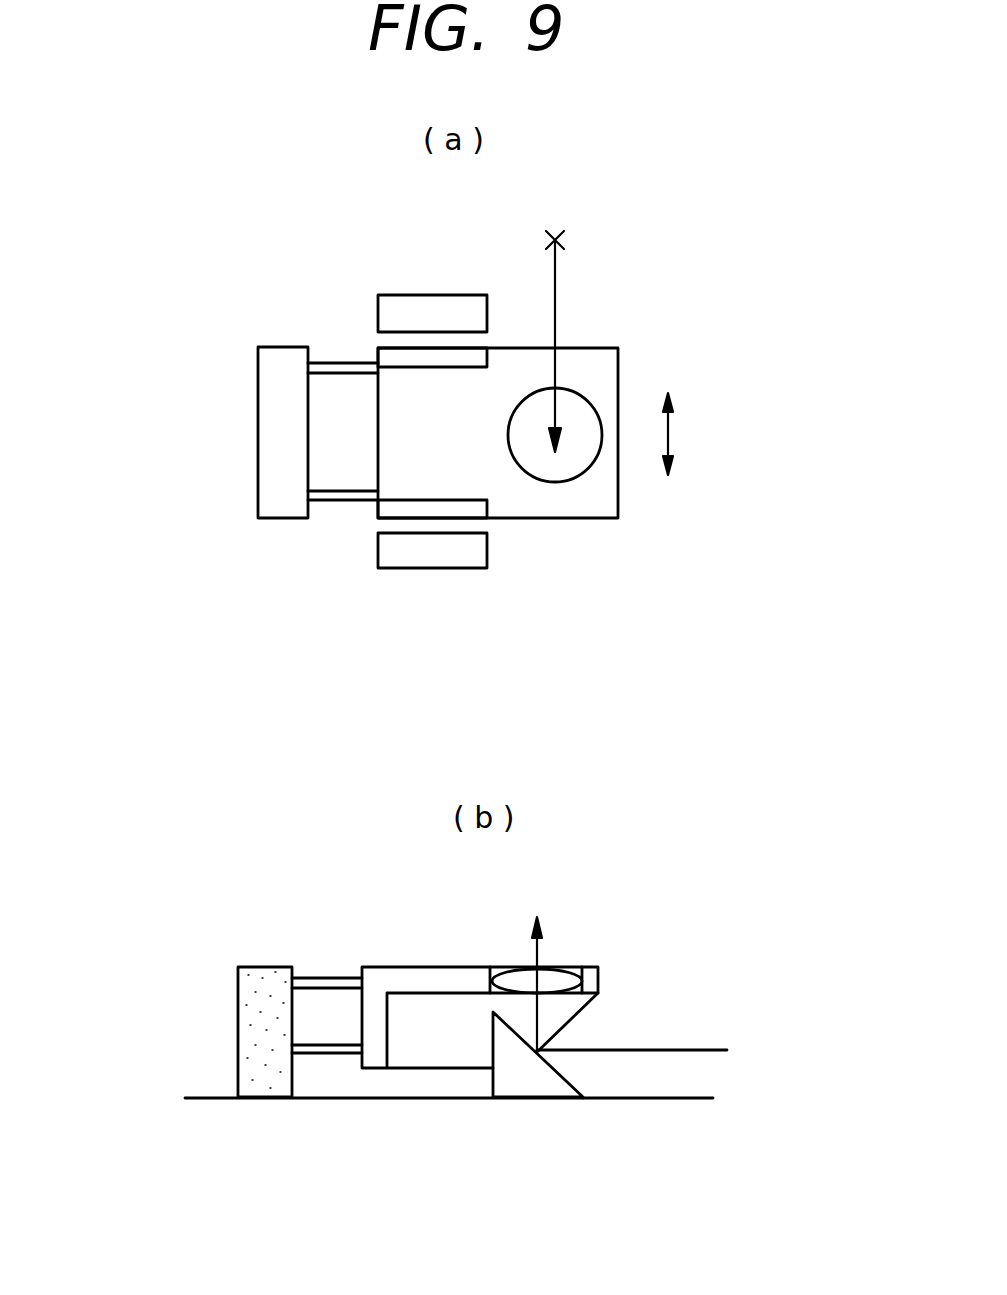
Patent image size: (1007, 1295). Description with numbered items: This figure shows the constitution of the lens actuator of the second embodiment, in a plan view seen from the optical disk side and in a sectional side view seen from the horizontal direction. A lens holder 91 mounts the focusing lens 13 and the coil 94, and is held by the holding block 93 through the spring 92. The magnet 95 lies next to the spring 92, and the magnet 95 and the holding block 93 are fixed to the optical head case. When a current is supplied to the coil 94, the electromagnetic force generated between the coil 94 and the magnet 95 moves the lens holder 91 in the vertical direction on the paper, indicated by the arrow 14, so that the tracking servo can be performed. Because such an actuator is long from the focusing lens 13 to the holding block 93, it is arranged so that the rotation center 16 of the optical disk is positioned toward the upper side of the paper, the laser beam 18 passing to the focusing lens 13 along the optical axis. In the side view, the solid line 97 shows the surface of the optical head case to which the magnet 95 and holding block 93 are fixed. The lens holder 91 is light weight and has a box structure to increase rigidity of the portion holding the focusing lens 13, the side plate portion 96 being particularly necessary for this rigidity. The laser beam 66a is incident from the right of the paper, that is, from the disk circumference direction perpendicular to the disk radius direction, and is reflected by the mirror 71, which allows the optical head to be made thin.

The focusing lens 13 is at (600, 413).
The moving direction of objective lens 14 is at (668, 433).
The rotation center 16 is at (548, 237).
The laser light beam 18 is at (558, 302).
The mirror 71 is at (522, 1088).
The lens holder 91 is at (605, 520).
The spring 92 is at (343, 502).
The holding block 93 is at (257, 425).
The coil 94 is at (487, 520).
The magnet 95 is at (420, 565).
The side plate portion 96 is at (563, 1013).
The surface of the optical head case 97 is at (323, 1098).
The laser beam 66a is at (638, 1050).